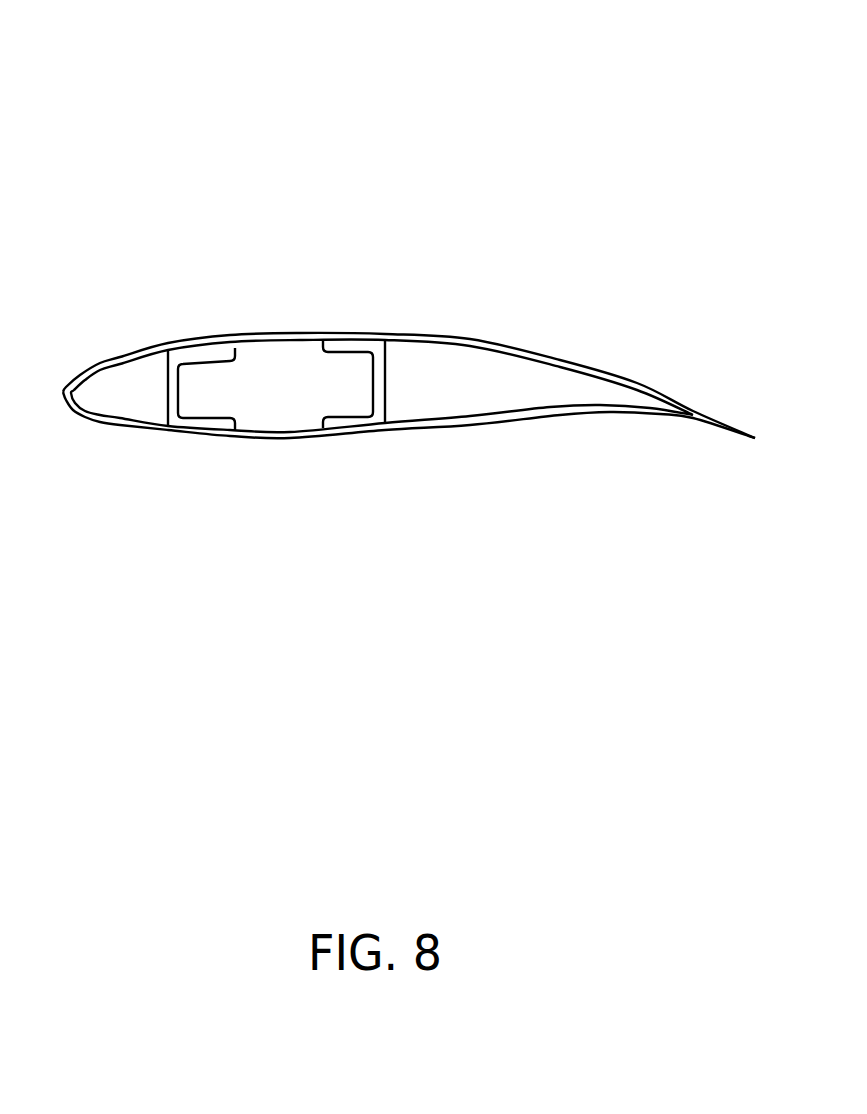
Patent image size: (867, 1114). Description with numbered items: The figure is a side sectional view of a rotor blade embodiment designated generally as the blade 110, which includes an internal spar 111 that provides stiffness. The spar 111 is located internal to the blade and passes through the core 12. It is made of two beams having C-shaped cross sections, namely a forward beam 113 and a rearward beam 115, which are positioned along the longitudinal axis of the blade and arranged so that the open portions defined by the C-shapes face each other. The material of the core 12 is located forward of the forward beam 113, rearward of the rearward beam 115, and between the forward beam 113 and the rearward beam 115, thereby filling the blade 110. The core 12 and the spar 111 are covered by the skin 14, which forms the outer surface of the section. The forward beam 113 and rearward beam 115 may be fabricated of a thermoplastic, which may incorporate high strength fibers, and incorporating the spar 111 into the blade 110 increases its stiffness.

The blade 110 is at (415, 118).
The spar 111 is at (272, 378).
The forward beam 113 is at (166, 407).
The rearward beam 115 is at (387, 385).
The skin 14 is at (637, 383).
The core 12 is at (552, 390).